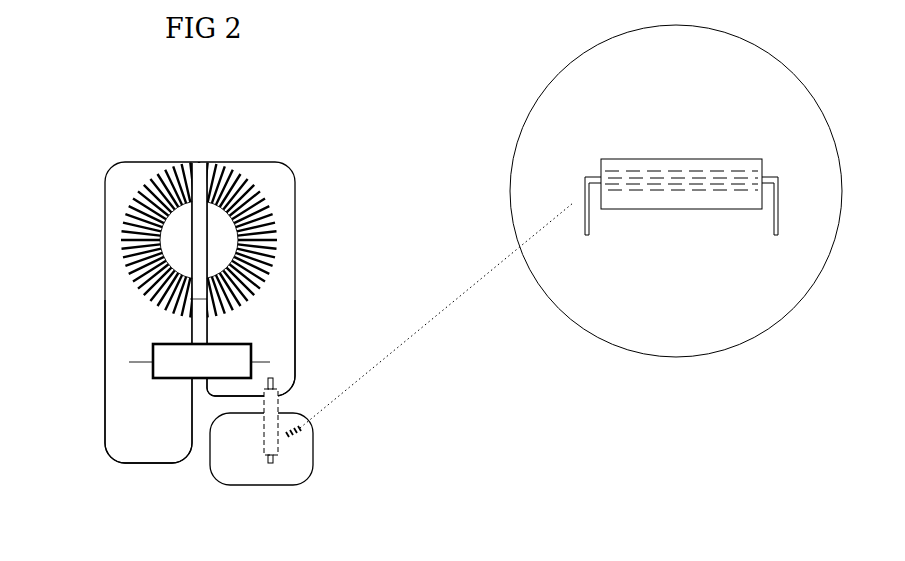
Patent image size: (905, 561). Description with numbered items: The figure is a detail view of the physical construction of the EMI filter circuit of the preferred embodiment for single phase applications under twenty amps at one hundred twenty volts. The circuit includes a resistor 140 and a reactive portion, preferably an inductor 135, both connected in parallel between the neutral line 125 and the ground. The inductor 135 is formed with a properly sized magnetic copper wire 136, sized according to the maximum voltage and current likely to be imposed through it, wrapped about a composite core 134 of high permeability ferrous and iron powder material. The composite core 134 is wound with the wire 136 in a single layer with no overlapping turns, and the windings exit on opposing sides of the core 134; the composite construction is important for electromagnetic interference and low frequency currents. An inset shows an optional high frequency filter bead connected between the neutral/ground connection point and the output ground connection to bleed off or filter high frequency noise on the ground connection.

The neutral line 125 is at (218, 308).
The composite core 134 is at (193, 297).
The inductor 135 is at (166, 172).
The magnetic copper wire 136 is at (252, 222).
The resistor 140 is at (199, 361).